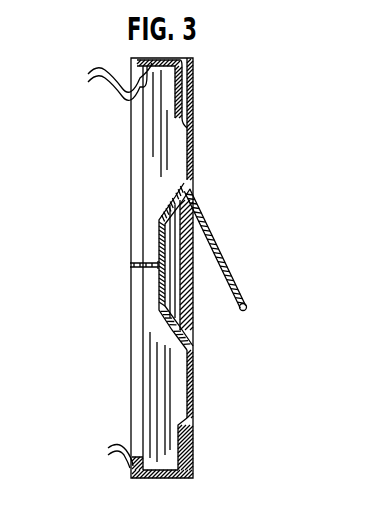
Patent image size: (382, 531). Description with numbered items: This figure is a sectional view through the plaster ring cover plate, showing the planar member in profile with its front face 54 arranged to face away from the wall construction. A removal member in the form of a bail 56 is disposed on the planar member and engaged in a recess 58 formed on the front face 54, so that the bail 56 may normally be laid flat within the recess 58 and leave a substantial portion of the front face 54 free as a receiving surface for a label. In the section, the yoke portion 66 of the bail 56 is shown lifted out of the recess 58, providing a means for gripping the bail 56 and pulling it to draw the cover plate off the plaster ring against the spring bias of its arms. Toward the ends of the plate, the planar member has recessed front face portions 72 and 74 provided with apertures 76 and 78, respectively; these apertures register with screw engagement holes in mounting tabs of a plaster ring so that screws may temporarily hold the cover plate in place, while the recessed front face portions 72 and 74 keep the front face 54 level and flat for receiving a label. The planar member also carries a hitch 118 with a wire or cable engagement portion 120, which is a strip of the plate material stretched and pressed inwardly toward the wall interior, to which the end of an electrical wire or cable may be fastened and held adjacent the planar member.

The front face 54 is at (194, 154).
The bail 56 is at (228, 272).
The recess 58 is at (197, 327).
The yoke portion 66 is at (246, 308).
The recessed front face portion 72 is at (188, 108).
The recessed front face portion 74 is at (188, 437).
The aperture 76 is at (181, 88).
The aperture 78 is at (193, 455).
The hitch 118 is at (101, 268).
The wire or cable engagement portion 120 is at (162, 293).